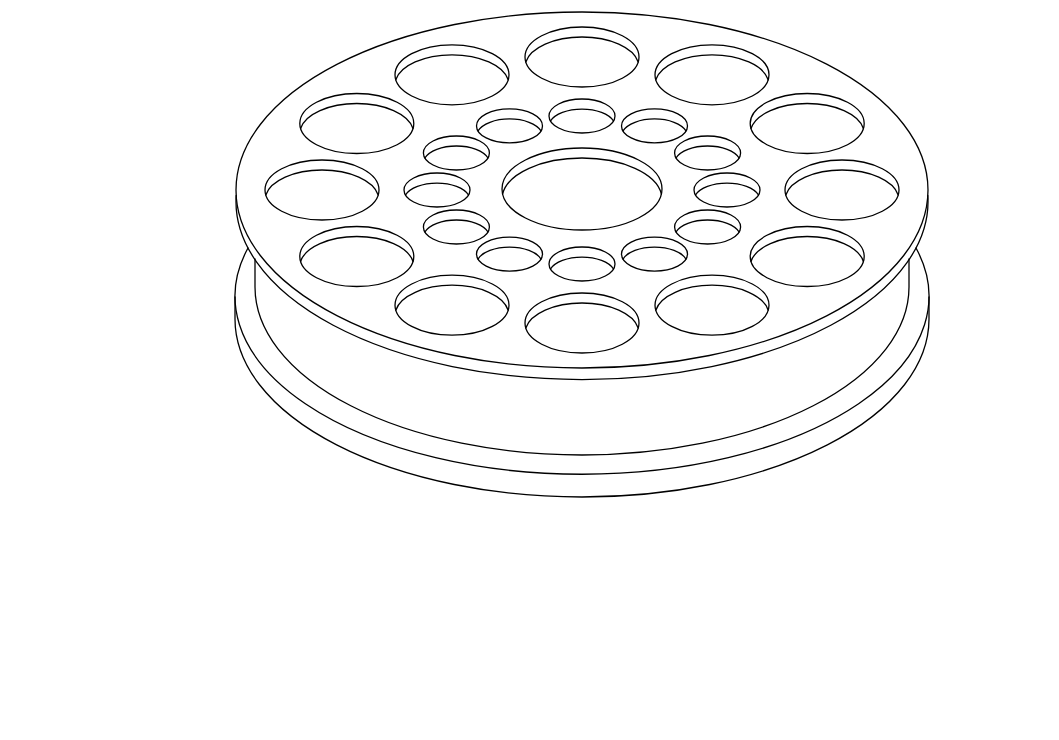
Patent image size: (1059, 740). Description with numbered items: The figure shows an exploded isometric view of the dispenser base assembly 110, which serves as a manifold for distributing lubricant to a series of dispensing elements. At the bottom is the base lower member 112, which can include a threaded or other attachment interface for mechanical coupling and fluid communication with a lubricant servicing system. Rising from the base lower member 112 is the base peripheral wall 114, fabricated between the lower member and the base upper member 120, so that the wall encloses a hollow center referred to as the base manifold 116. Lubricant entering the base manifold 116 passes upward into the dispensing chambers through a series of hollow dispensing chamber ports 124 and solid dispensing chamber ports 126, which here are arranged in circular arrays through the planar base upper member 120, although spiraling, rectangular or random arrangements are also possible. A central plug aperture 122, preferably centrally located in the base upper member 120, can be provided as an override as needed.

The dispenser base assembly 110 is at (228, 175).
The base lower member 112 is at (296, 438).
The base peripheral wall 114 is at (875, 402).
The base manifold 116 is at (847, 345).
The base upper member 120 is at (655, 370).
The central plug aperture 122 is at (578, 187).
The hollow dispensing chamber port 124 is at (710, 155).
The solid dispensing chamber port 126 is at (838, 193).